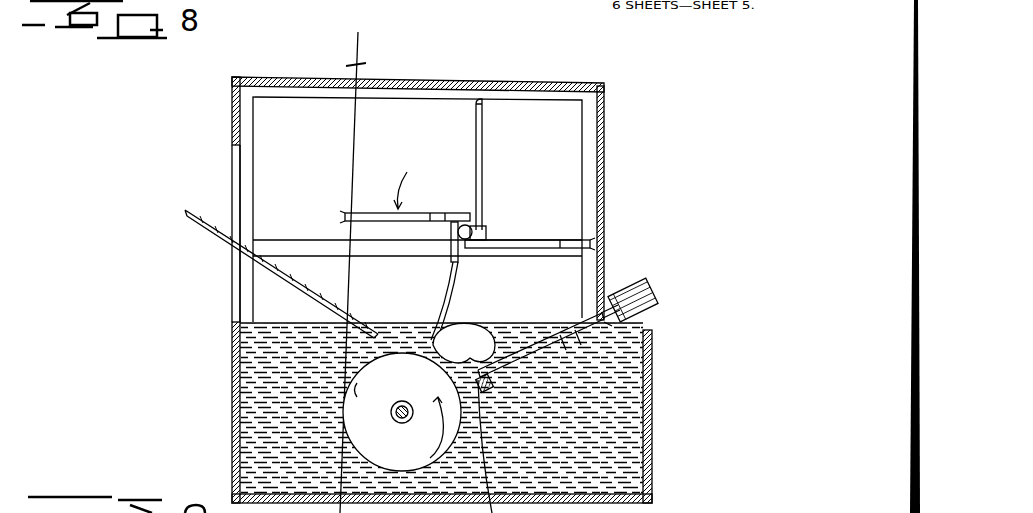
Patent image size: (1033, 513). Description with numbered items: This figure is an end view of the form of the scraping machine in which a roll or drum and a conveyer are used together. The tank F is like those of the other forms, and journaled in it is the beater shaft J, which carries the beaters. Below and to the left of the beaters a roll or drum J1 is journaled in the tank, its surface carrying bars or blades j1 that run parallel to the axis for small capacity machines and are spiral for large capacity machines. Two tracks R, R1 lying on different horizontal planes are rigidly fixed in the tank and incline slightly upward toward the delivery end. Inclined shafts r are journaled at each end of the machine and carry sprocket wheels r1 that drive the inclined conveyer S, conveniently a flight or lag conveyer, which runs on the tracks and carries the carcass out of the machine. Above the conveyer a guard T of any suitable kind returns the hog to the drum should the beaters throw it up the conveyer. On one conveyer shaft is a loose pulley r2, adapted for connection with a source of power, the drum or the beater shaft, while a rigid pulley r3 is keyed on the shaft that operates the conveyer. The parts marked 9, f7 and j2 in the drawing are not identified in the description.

The guard T is at (605, 177).
The tank F is at (232, 440).
The roll or drum J1 is at (232, 382).
The plumb line 9 is at (353, 266).
The twisted rod f7 is at (223, 240).
The pipe j2 is at (483, 153).
The beater shaft J is at (479, 232).
The bars or blades j1 is at (432, 340).
The inclined conveyer S is at (580, 310).
The inclined shafts r is at (565, 344).
The sprocket wheels r1 is at (600, 334).
The loose pulley r2 is at (635, 279).
The rigid pulley r3 is at (648, 292).
The track R is at (603, 327).
The track R1 is at (560, 345).